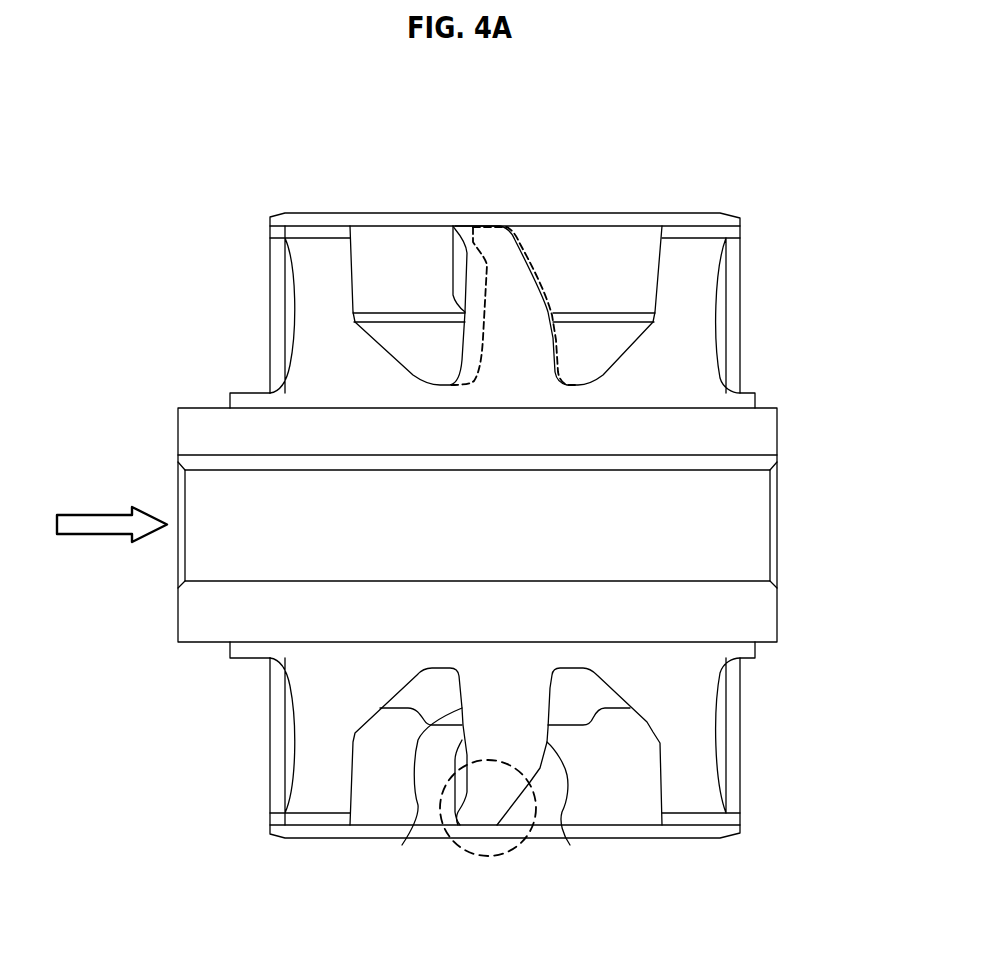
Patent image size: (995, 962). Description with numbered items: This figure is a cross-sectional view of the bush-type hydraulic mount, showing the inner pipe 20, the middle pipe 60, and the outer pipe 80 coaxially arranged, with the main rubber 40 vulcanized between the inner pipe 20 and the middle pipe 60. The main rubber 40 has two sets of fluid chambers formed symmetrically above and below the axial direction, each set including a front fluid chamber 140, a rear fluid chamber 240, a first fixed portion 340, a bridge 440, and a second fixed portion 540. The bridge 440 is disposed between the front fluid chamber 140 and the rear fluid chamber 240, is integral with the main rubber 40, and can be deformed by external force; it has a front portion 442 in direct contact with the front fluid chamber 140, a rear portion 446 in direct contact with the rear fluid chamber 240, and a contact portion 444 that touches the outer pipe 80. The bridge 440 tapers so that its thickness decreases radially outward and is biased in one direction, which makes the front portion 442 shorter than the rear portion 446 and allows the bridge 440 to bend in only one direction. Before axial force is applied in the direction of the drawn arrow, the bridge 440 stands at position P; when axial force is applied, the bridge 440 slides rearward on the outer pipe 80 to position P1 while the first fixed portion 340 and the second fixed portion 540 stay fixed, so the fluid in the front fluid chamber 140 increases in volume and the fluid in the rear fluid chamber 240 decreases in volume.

The inner pipe 20 is at (762, 433).
The main rubber 40 is at (695, 363).
The middle pipe 60 is at (732, 232).
The outer pipe 80 is at (627, 220).
The front fluid chamber 140 is at (390, 298).
The rear fluid chamber 240 is at (598, 258).
The first fixed portion 340 is at (303, 258).
The bridge 440 is at (473, 280).
The front portion 442 is at (402, 845).
The contact portion 444 is at (481, 815).
The rear portion 446 is at (570, 845).
The second fixed portion 540 is at (695, 252).
The position P is at (457, 248).
The position P1 is at (513, 227).